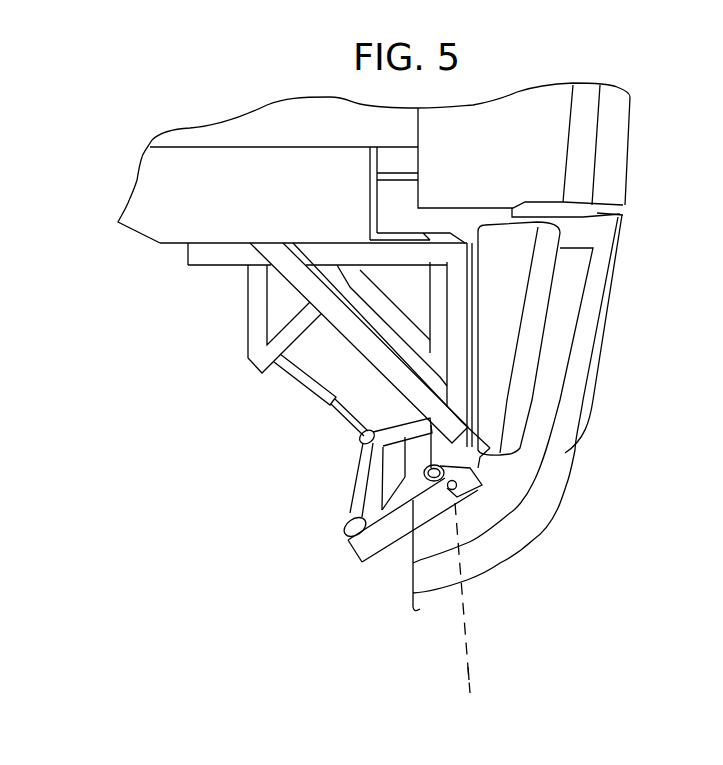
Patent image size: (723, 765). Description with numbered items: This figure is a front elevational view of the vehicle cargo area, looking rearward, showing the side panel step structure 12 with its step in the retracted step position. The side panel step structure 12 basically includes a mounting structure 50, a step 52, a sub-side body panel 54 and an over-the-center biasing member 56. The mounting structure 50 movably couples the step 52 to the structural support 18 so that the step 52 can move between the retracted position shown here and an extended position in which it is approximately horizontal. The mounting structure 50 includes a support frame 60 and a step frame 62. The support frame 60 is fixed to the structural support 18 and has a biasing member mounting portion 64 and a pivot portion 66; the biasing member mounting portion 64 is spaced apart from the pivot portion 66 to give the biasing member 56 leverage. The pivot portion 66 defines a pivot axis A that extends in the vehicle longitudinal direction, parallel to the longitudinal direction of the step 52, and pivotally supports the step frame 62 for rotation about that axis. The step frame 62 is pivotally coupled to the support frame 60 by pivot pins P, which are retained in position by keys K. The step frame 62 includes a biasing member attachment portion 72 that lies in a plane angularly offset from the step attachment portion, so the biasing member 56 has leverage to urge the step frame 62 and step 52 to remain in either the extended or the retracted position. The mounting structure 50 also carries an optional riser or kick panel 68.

The side panel step structure 12 is at (630, 311).
The structural support 18 is at (173, 210).
The mounting structure 50 is at (275, 408).
The step 52 is at (532, 335).
The sub-side body panel 54 is at (573, 450).
The over-the-center biasing member 56 is at (312, 390).
The support frame 60 is at (258, 302).
The step frame 62 is at (368, 553).
The biasing member mounting portion 64 is at (250, 366).
The pivot portion 66 is at (460, 455).
The kick panel 68 is at (477, 318).
The biasing member attachment portion 72 is at (388, 515).
The key K is at (483, 460).
The pivot pin P is at (443, 497).
The pivot axis A is at (470, 672).